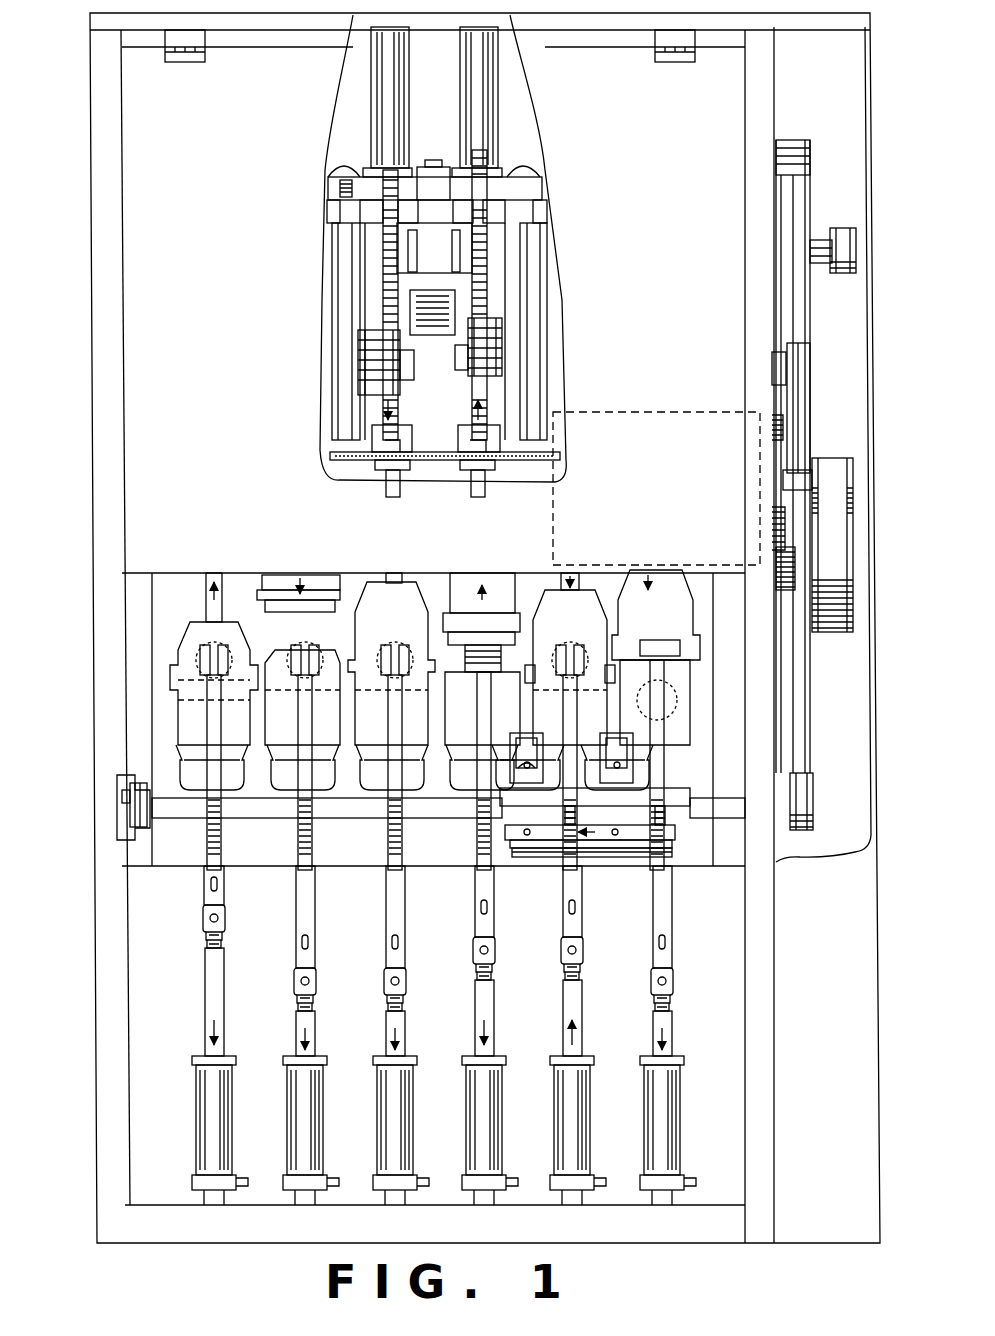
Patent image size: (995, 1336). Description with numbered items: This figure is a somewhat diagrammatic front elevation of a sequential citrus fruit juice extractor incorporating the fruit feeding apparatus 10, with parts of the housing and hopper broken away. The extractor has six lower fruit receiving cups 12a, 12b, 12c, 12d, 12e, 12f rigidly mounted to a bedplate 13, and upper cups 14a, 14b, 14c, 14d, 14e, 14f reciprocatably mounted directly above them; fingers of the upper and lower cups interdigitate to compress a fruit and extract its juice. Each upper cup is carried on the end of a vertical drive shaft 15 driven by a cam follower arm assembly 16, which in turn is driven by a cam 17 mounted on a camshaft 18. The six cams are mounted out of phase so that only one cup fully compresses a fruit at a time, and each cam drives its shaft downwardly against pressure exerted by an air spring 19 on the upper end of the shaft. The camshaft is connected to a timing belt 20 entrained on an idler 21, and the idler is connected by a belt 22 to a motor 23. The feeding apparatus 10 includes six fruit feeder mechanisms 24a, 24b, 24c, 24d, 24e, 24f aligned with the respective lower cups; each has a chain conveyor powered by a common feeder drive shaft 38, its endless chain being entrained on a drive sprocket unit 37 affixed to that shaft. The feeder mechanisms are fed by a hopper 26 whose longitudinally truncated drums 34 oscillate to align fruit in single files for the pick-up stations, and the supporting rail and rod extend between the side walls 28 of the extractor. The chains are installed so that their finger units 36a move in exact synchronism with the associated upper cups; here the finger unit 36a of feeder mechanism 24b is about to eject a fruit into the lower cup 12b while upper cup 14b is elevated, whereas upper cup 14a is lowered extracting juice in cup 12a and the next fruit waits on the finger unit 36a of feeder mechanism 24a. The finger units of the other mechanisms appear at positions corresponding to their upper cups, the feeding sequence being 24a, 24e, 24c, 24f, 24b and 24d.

The sequential citrus fruit feeding apparatus 10 is at (680, 692).
The lower fruit receiving cup 12a is at (210, 672).
The lower fruit receiving cup 12b is at (280, 772).
The lower fruit receiving cup 12c is at (370, 770).
The lower fruit receiving cup 12d is at (462, 770).
The lower fruit receiving cup 12e is at (540, 690).
The lower fruit receiving cup 12f is at (676, 665).
The bedplate 13 is at (160, 852).
The upper cup 14a is at (200, 622).
The upper cup 14b is at (312, 575).
The upper cup 14c is at (422, 628).
The upper cup 14d is at (492, 573).
The upper cup 14e is at (575, 600).
The upper cup 14f is at (660, 578).
The vertical drive shaft 15 is at (393, 490).
The cam follower arm assembly 16 is at (365, 388).
The cam 17 is at (388, 220).
The camshaft 18 is at (332, 250).
The air spring 19 is at (465, 92).
The timing belt 20 is at (790, 138).
The idler 21 is at (775, 562).
The belt 22 is at (830, 632).
The motor 23 is at (625, 412).
The fruit feeder mechanism 24a is at (207, 787).
The fruit feeder mechanism 24b is at (295, 790).
The fruit feeder mechanism 24c is at (385, 790).
The fruit feeder mechanism 24d is at (475, 790).
The fruit feeder mechanism 24e is at (568, 775).
The fruit feeder mechanism 24f is at (668, 725).
The hopper 26 is at (505, 822).
The side wall 28 is at (97, 925).
The longitudinally truncated drum 34 is at (570, 780).
The finger unit 36a is at (202, 672).
The drive sprocket unit 37 is at (300, 860).
The feeder drive shaft 38 is at (788, 800).